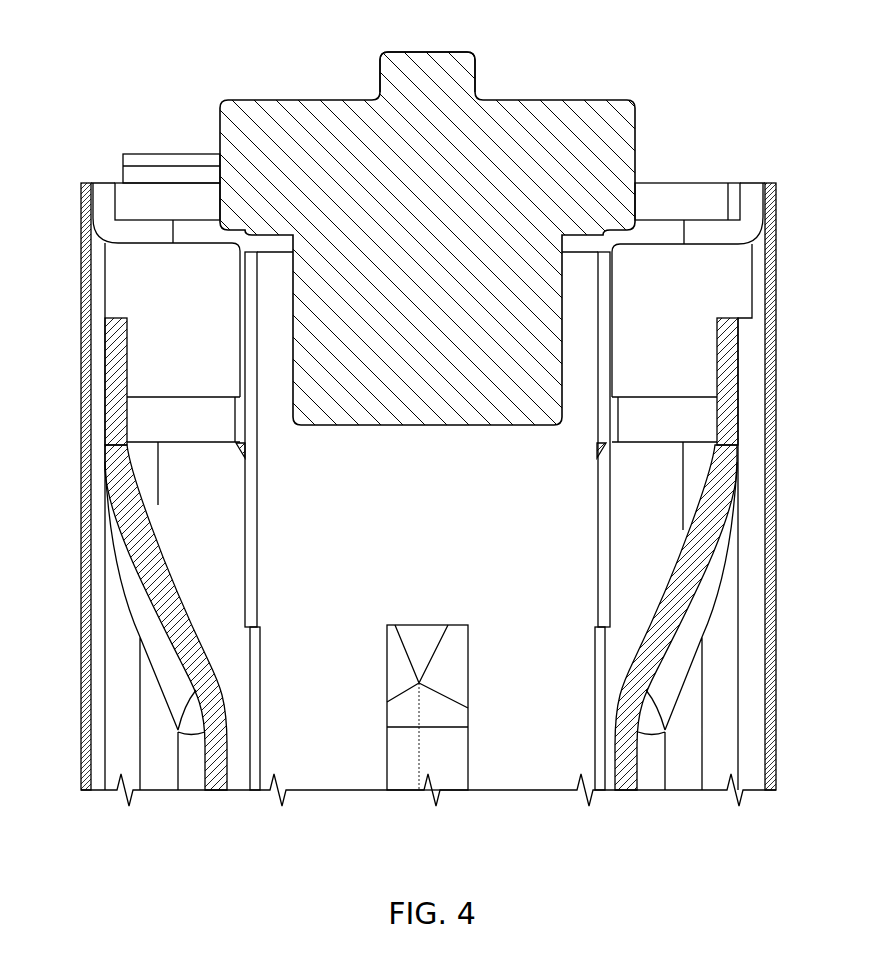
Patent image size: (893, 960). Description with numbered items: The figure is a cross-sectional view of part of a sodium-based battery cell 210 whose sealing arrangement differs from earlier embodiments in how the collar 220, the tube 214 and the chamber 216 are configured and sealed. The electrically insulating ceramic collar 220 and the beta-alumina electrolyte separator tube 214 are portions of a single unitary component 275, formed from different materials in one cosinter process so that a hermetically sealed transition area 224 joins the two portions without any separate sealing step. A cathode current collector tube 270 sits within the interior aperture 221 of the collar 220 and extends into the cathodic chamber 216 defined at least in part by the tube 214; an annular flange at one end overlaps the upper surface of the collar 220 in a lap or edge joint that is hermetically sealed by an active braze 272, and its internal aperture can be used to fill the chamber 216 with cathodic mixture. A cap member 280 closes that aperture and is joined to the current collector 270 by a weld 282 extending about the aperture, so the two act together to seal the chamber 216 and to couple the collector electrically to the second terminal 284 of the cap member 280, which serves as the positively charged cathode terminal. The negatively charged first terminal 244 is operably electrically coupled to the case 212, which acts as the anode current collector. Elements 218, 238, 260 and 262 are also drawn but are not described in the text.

The sodium-based battery cell 210 is at (127, 42).
The case 212 is at (80, 258).
The beta-alumina tube 214 is at (105, 457).
The cathodic chamber 216 is at (190, 523).
The chamber 218 is at (158, 750).
The alpha-alumina collar 220 is at (147, 298).
The interior aperture 221 is at (220, 290).
The transition area 224 is at (103, 327).
The housing top 238 is at (80, 195).
The first terminal 244 is at (138, 153).
The spacer 260 is at (107, 190).
The liner 262 is at (82, 253).
The cathode current collector tube 270 is at (440, 508).
The active braze 272 is at (235, 247).
The unitary component 275 is at (160, 368).
The cap member 280 is at (492, 98).
The weld 282 is at (267, 230).
The second terminal 284 is at (420, 65).